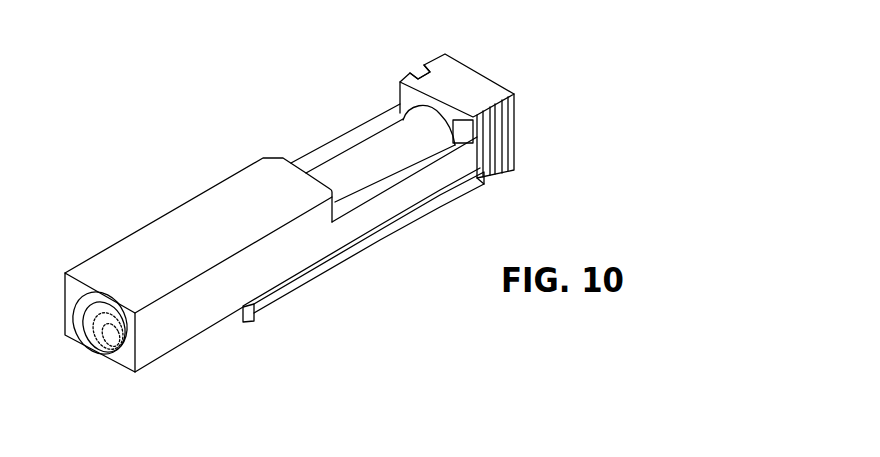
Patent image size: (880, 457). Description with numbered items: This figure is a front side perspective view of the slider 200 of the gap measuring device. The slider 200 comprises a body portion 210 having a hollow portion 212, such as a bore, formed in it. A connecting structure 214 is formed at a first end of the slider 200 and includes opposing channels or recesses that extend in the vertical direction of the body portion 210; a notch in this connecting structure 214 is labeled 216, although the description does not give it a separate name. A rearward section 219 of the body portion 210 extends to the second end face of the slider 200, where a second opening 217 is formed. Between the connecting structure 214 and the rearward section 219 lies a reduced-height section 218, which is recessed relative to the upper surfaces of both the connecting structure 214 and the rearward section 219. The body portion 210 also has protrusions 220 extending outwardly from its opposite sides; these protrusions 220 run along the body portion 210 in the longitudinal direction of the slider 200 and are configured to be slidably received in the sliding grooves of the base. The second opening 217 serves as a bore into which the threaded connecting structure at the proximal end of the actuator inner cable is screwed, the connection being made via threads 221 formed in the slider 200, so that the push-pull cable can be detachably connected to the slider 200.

The slider 200 is at (164, 147).
The body portion 210 is at (207, 307).
The hollow portion 212 is at (338, 180).
The connecting structure 214 is at (460, 88).
The notch 216 is at (418, 66).
The second opening 217 is at (98, 323).
The reduced-height section 218 is at (384, 116).
The rearward section 219 is at (148, 253).
The protrusions 220 is at (428, 226).
The threads 221 is at (108, 352).